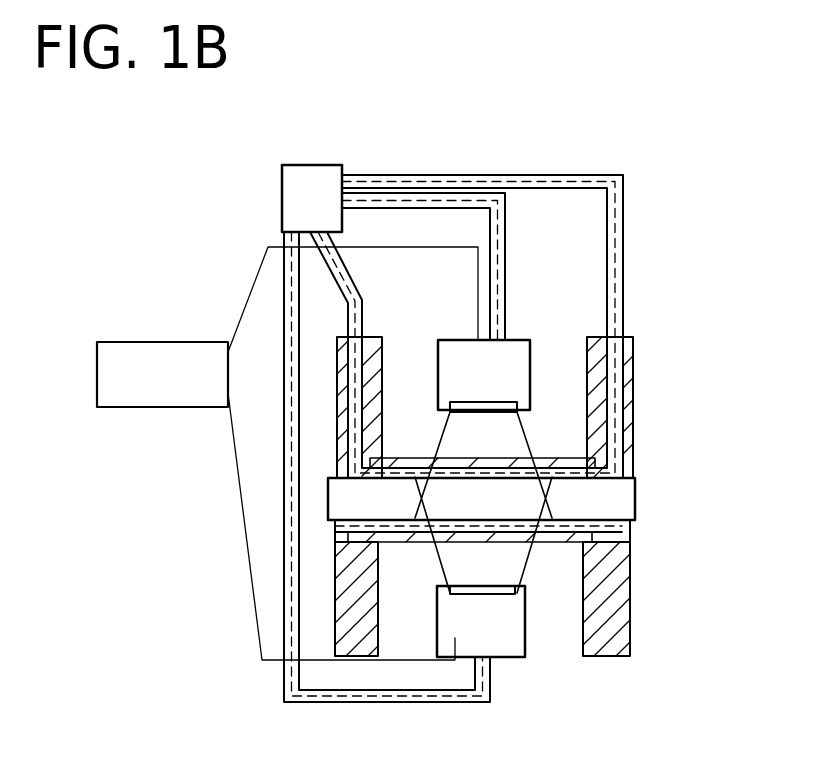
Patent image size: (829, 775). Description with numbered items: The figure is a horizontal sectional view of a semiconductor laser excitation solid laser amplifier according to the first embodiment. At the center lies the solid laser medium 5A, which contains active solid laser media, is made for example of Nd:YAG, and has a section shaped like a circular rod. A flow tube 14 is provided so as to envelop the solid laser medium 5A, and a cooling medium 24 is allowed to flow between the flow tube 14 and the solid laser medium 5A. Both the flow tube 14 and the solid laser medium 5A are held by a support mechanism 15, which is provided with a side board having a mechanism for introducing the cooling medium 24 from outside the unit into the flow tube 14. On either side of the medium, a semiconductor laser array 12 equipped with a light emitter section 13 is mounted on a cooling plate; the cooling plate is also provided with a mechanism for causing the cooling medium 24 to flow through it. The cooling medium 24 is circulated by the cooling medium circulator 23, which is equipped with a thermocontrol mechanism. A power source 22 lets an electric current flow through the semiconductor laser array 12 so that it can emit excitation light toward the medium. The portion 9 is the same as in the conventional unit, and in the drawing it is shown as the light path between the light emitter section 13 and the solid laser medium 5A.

The power source 22 is at (158, 408).
The cooling medium circulator 23 is at (312, 185).
The cooling medium 24 is at (623, 208).
The semiconductor laser array 12 is at (457, 362).
The light emitter section 13 is at (490, 408).
The portion 9 is at (438, 446).
The flow tube 14 is at (553, 458).
The support mechanism 15 is at (633, 390).
The solid laser medium 5A is at (635, 497).